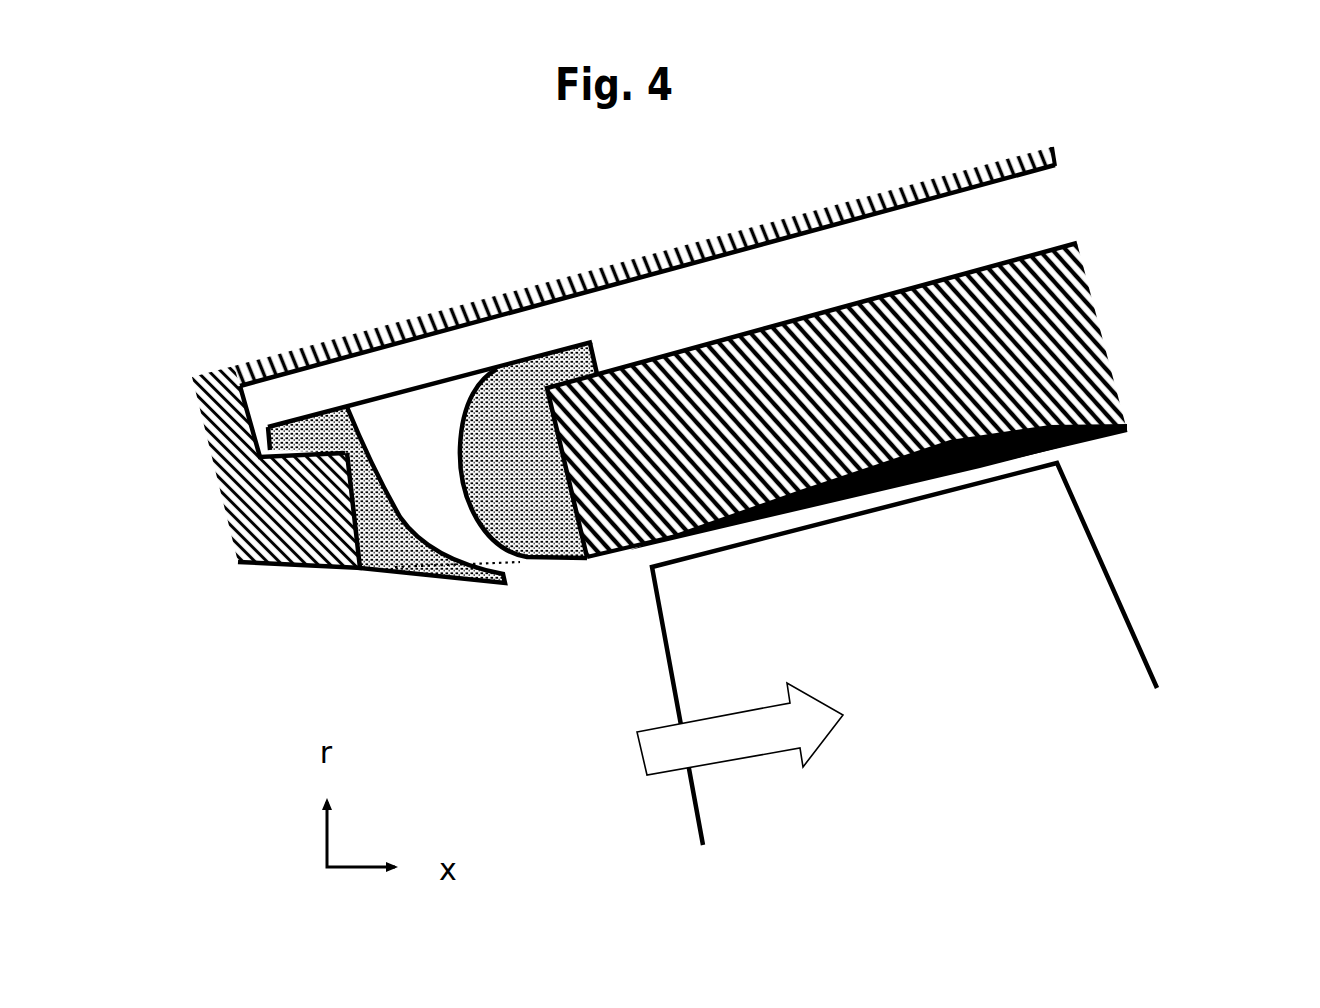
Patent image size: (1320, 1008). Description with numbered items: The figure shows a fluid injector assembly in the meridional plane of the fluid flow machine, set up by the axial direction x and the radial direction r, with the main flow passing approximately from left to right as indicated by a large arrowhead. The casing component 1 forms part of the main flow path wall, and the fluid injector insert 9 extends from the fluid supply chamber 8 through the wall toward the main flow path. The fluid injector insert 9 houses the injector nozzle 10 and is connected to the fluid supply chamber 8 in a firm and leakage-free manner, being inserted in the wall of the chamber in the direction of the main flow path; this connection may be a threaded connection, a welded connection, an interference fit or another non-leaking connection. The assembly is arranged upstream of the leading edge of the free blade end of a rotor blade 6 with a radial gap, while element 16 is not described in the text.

The casing component 1 is at (1077, 327).
The rotor blade 6 is at (1057, 587).
The fluid supply chamber 8 is at (1000, 213).
The fluid injector insert 9 is at (377, 533).
The injector nozzle 10 is at (517, 570).
The casing carrier 16 is at (343, 500).